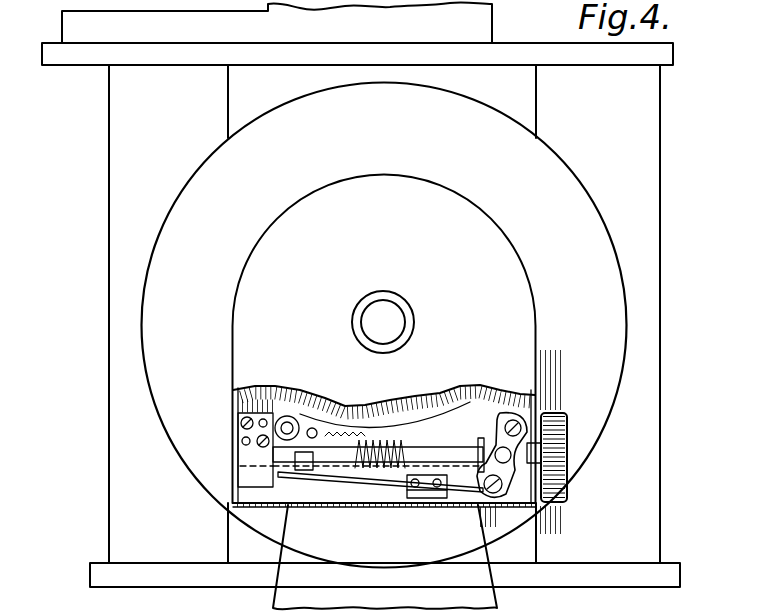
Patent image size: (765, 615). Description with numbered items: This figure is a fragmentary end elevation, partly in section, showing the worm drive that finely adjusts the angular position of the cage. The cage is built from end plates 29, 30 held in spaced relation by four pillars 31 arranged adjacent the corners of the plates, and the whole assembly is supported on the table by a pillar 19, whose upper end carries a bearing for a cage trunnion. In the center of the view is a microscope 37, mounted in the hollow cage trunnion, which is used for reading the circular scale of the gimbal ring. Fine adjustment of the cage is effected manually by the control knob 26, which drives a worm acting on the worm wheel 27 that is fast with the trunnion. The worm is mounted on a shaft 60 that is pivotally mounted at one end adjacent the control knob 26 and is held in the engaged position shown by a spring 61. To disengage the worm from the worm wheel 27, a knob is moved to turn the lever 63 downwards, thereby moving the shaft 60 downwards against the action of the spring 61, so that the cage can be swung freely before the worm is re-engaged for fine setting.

The pillar 19 is at (385, 557).
The control knob 26 is at (388, 483).
The worm wheel 27 is at (361, 411).
The end plate 29 is at (540, 52).
The end plate 30 is at (172, 567).
The pillars 31 is at (384, 314).
The microscope 37 is at (405, 299).
The shaft 60 is at (446, 449).
The spring 61 is at (320, 483).
The lever 63 is at (304, 421).